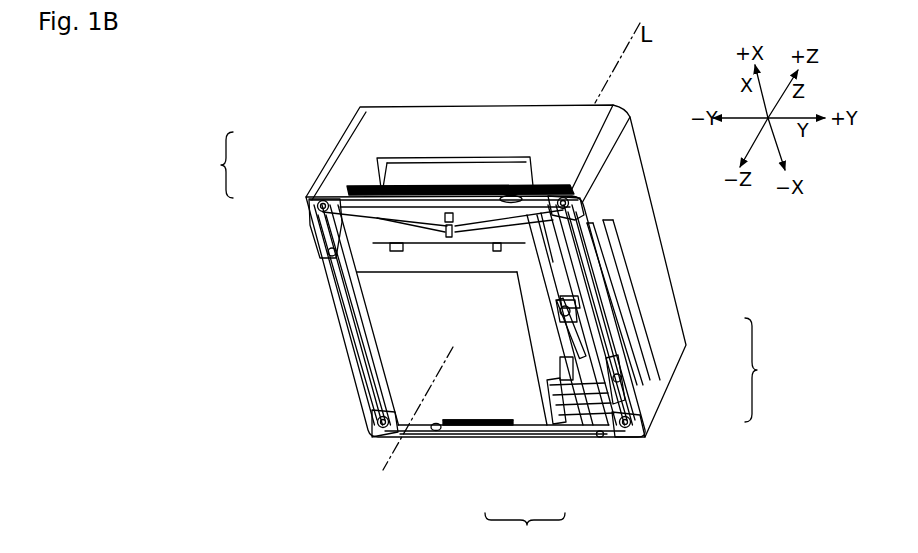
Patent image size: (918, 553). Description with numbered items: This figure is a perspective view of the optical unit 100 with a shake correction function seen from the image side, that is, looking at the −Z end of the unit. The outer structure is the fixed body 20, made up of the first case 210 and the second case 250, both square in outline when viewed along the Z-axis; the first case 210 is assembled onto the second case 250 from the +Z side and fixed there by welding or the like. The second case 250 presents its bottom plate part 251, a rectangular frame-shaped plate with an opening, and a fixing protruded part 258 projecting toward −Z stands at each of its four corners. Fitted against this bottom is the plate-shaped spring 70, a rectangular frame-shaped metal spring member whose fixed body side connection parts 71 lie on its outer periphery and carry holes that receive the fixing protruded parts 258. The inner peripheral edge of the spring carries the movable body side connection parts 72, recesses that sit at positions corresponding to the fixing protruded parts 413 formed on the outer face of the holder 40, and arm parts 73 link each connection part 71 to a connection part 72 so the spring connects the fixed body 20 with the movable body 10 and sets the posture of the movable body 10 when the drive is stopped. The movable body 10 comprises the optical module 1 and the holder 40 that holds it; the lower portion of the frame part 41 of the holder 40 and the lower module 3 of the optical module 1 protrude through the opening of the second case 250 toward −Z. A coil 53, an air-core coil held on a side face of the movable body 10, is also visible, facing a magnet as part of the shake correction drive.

The optical unit 100 is at (281, 112).
The fixed body 20 is at (216, 165).
The first case 210 is at (323, 141).
The second case 250 is at (298, 247).
The bottom plate part 251 is at (592, 262).
The fixing protruded part 258 is at (581, 203).
The fixed body side connection part 71 is at (583, 200).
The coil 53 is at (425, 175).
The movable body side connection part 72 is at (449, 213).
The fixing protruded part 413 is at (448, 235).
The arm part 73 is at (603, 340).
The plate-shaped spring 70 is at (762, 370).
The holder 40 is at (557, 352).
The frame part 41 is at (603, 397).
The lower module 3 is at (557, 405).
The optical module 1 is at (487, 423).
The movable body 10 is at (525, 529).